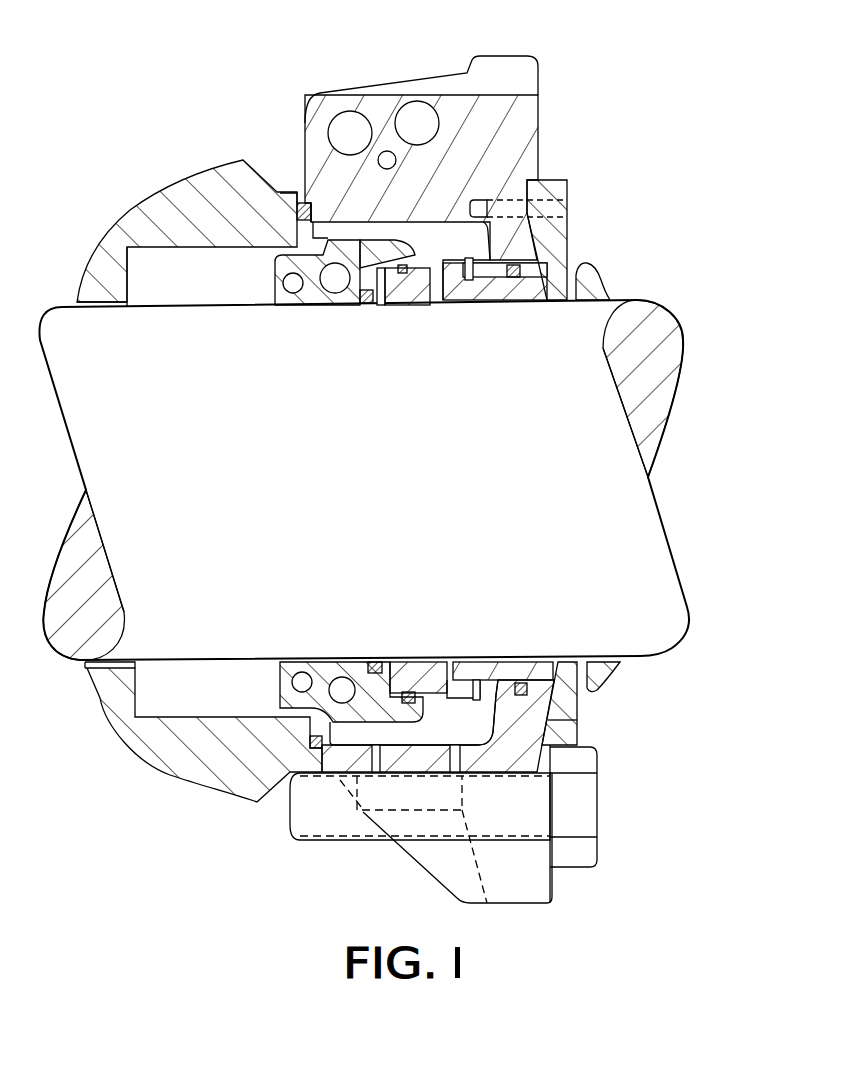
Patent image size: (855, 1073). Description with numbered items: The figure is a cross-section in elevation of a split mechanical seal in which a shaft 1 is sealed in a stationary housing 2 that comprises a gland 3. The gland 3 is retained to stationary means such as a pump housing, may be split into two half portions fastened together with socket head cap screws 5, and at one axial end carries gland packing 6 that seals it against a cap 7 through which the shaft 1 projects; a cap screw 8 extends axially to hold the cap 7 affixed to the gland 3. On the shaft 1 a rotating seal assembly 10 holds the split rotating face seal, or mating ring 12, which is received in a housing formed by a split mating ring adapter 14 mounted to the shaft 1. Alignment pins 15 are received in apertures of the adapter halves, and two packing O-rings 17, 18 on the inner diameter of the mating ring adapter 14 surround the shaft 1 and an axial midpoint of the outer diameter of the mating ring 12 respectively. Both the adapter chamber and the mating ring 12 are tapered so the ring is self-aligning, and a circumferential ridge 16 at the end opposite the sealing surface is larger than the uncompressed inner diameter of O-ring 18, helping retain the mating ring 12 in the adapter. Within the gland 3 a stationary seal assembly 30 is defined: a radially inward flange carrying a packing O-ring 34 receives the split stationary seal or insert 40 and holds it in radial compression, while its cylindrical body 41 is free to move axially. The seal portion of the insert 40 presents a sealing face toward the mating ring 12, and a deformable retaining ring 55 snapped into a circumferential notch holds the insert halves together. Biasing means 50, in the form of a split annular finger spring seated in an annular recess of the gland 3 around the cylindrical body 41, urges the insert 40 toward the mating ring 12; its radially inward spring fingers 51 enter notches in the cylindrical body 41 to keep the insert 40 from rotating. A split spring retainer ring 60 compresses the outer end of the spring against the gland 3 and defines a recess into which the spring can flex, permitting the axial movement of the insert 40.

The shaft 1 is at (648, 545).
The stationary housing 2 is at (204, 114).
The gland 3 is at (523, 120).
The socket head cap screws 5 is at (407, 110).
The gland packing 6 is at (298, 207).
The cap 7 is at (177, 197).
The cap screw 8 is at (580, 812).
The rotating seal assembly 10 is at (251, 706).
The mating ring 12 is at (425, 303).
The mating ring adapter 14 is at (322, 663).
The alignment pins 15 is at (292, 295).
The circumferential ridge 16 is at (390, 303).
The mating ring adapter packing O-ring 17 is at (358, 302).
The mating ring adapter packing O-ring 18 is at (427, 262).
The stationary seal assembly 30 is at (648, 122).
The packing O-ring 34 is at (522, 270).
The stationary seal 40 is at (537, 668).
The cylindrical body 41 is at (522, 292).
The biasing means 50 is at (578, 698).
The spring fingers 51 is at (578, 728).
The retaining ring 55 is at (470, 282).
The spring retainer ring 60 is at (565, 230).